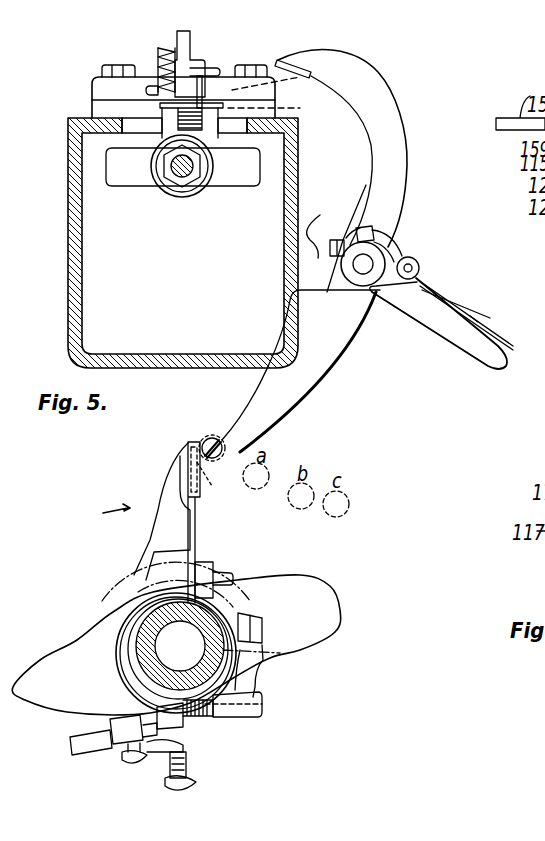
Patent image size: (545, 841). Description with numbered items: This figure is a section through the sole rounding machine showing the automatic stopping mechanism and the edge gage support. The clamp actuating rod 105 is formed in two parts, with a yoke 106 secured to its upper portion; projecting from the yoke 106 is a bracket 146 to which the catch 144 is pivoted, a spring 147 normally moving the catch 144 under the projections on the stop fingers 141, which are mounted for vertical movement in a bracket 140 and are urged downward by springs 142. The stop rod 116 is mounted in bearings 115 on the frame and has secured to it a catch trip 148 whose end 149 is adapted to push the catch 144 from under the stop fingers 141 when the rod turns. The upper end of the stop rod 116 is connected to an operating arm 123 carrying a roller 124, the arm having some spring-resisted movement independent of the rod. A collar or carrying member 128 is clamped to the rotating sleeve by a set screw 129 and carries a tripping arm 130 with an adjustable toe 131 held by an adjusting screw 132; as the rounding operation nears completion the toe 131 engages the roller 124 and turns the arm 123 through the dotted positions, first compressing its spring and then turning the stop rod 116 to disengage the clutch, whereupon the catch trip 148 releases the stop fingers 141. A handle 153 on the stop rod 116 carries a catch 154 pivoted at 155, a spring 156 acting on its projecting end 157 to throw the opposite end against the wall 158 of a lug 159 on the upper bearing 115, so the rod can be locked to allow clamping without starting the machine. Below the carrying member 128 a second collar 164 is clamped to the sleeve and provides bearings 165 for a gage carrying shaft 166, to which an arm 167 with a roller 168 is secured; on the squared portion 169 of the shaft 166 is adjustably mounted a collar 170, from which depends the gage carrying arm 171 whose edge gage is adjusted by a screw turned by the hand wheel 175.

The clamp actuating rod 105 is at (190, 172).
The yoke 106 is at (122, 175).
The bearings 115 is at (318, 212).
The stop rod 116 is at (364, 268).
The operating arm 123 is at (304, 394).
The roller 124 is at (216, 438).
The collar or carrying member 128 is at (122, 628).
The set screw 129 is at (222, 570).
The tripping arm 130 is at (166, 505).
The adjustable toe 131 is at (193, 442).
The adjusting screw 132 is at (222, 487).
The bracket 140 is at (92, 88).
The stop fingers 141 is at (186, 76).
The springs 142 is at (152, 82).
The catch 144 is at (218, 102).
The bracket 146 is at (162, 122).
The spring 147 is at (160, 54).
The catch trip 148 is at (401, 142).
The end of catch trip 149 is at (281, 58).
The handle 153 is at (442, 342).
The catch 154 is at (398, 249).
The pivot 155 is at (414, 266).
The spring 156 is at (474, 316).
The projecting end of catch 157 is at (482, 326).
The wall of lug 158 is at (372, 232).
The lug 159 is at (362, 248).
The second collar 164 is at (120, 682).
The bearings 165 is at (180, 730).
The gage carrying shaft 166 is at (206, 714).
The arm 167 is at (265, 668).
The roller 168 is at (260, 628).
The squared portion 169 is at (78, 750).
The collar 170 is at (110, 728).
The gage carrying arm 171 is at (160, 760).
The hand wheel 175 is at (196, 782).